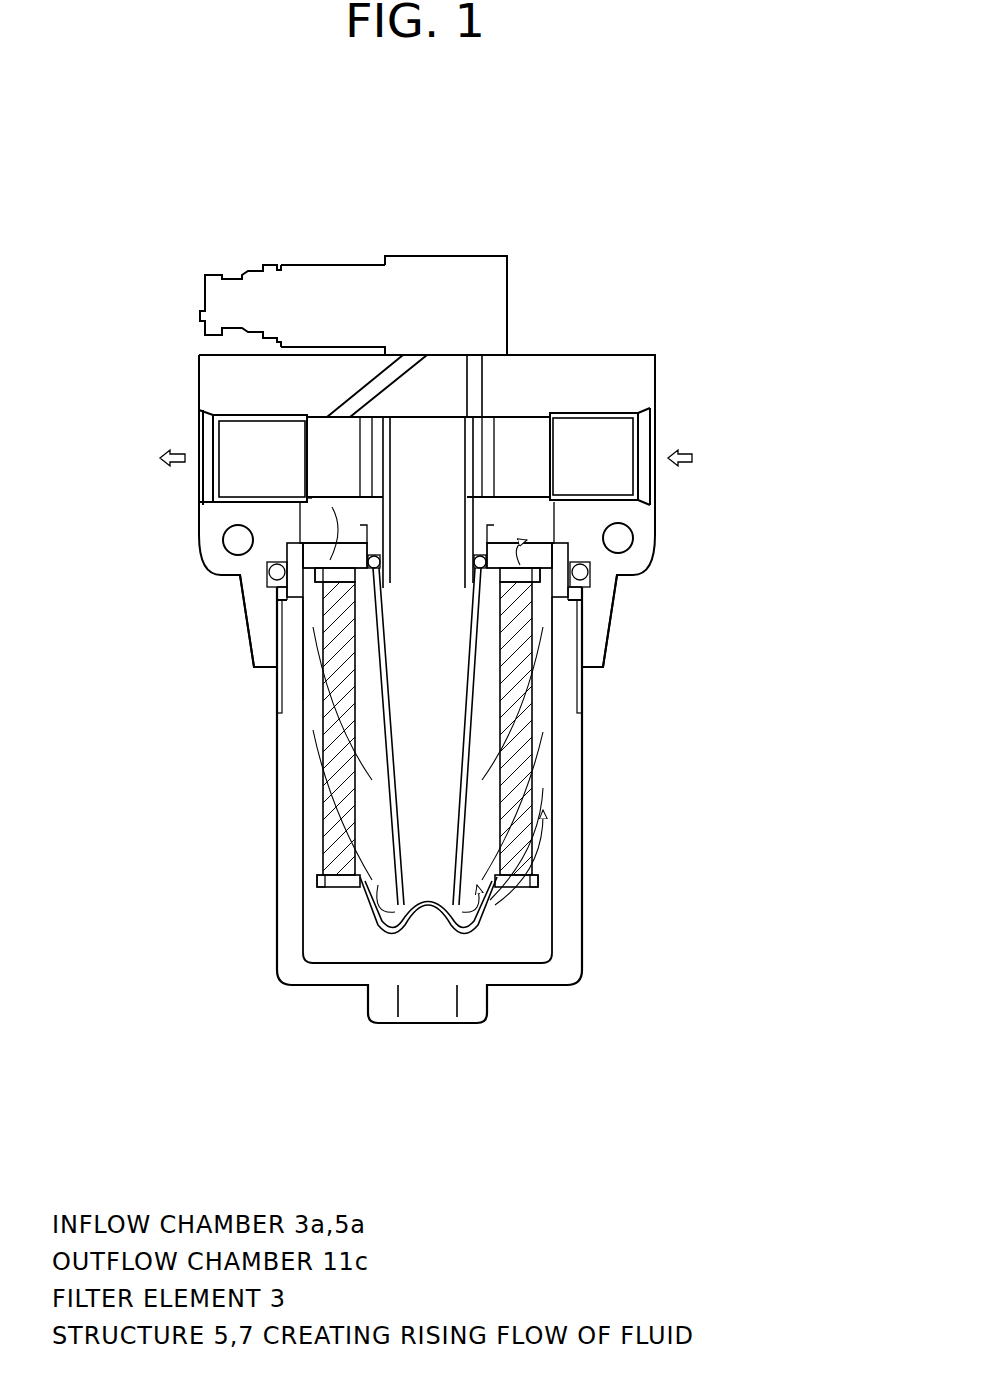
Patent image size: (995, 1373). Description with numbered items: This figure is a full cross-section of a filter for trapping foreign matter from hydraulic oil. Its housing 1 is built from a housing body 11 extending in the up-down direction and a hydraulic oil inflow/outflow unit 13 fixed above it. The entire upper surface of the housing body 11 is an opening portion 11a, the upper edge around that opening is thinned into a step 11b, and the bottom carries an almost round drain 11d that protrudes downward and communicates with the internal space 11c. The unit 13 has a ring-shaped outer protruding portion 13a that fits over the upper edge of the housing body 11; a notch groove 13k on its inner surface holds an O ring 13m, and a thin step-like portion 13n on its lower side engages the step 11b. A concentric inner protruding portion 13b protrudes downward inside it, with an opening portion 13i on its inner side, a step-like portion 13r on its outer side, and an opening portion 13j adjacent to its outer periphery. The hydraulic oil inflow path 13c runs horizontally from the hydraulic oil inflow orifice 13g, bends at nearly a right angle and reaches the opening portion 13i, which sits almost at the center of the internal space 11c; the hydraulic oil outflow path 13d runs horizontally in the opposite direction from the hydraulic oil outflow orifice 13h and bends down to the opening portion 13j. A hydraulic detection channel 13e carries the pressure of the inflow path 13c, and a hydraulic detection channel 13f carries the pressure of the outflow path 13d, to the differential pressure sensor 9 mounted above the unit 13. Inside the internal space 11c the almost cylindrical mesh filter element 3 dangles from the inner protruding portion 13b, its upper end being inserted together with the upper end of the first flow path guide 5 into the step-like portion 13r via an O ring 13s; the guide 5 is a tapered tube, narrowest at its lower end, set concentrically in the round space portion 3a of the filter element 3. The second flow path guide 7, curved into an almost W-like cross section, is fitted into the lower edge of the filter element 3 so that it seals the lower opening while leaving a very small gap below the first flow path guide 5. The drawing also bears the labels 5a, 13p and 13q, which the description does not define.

The housing 1 is at (237, 816).
The filter element 3 is at (532, 790).
The round space portion 3a is at (495, 727).
The first flow path guide 5 is at (385, 772).
The inflow chamber in inner tube 5a is at (442, 662).
The second flow path guide 7 is at (380, 930).
The differential pressure sensor 9 is at (348, 257).
The housing body 11 is at (592, 883).
The opening portion 11a is at (275, 672).
The step 11b is at (273, 562).
The internal space 11c is at (325, 918).
The drain 11d is at (433, 1005).
The hydraulic oil inflow/outflow unit 13 is at (668, 540).
The outer protruding portion 13a is at (596, 652).
The inner protruding portion 13b is at (560, 610).
The hydraulic oil inflow path 13c is at (508, 446).
The hydraulic oil outflow path 13d is at (240, 472).
The hydraulic detection channel 13e is at (478, 382).
The hydraulic detection channel 13f is at (368, 382).
The hydraulic oil inflow orifice 13g is at (650, 482).
The hydraulic oil outflow orifice 13h is at (205, 420).
The opening portion 13i is at (433, 526).
The opening portion 13j is at (230, 538).
The notch groove 13k is at (250, 574).
The O ring 13m is at (267, 617).
The step-like portion 13n is at (590, 588).
The O-ring 13p is at (220, 548).
The mounting hole 13q is at (622, 535).
The step-like portion 13r is at (322, 738).
The O ring 13s is at (278, 694).